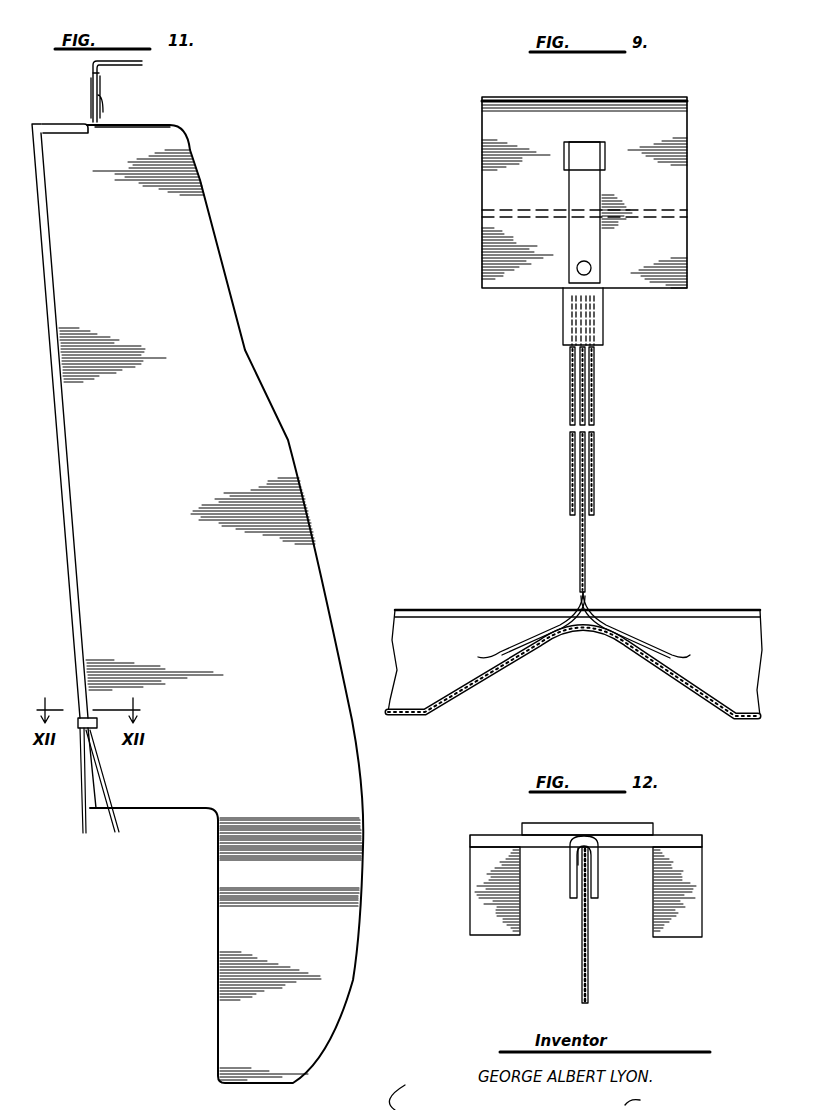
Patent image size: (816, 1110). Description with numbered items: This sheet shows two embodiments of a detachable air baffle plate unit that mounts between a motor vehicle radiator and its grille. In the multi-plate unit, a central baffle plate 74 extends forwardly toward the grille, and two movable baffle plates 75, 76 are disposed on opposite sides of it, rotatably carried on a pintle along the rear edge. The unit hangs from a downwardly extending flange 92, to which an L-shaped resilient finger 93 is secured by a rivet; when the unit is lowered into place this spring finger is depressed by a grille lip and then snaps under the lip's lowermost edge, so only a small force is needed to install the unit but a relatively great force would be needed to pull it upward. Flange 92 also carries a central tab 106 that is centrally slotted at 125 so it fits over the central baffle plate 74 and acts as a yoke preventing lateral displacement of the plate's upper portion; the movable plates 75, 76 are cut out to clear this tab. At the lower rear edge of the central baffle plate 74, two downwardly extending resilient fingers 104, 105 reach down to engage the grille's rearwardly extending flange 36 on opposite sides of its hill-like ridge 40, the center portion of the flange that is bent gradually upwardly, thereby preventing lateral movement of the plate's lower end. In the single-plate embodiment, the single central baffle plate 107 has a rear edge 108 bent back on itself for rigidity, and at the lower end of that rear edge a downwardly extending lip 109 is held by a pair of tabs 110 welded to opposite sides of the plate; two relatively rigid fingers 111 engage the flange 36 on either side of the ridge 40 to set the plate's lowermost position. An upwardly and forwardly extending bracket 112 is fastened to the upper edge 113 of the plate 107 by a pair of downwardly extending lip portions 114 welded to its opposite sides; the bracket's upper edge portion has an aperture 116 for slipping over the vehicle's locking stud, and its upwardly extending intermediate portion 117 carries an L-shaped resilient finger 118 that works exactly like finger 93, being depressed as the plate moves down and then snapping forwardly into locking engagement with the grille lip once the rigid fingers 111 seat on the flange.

In FIG. 9, the rearwardly extending flange 36 is at (398, 720).
In FIG. 9, the hill-like ridge 40 is at (580, 640).
In FIG. 9, the central baffle plate 74 is at (578, 530).
In FIG. 9, the movable baffle plate 75 is at (573, 462).
In FIG. 9, the movable baffle plate 76 is at (600, 458).
In FIG. 9, the downwardly extending flange 92 is at (508, 188).
In FIG. 9, the L-shaped resilient finger 93 is at (588, 200).
In FIG. 9, the downwardly extending resilient finger 104 is at (560, 616).
In FIG. 9, the downwardly extending resilient finger 105 is at (605, 616).
In FIG. 9, the central tab 106 is at (562, 322).
In FIG. 11, the single central baffle plate 107 is at (243, 361).
In FIG. 12, the single central baffle plate 107 is at (590, 975).
In FIG. 11, the rear edge 108 is at (60, 441).
In FIG. 12, the rear edge 108 is at (580, 850).
In FIG. 11, the downwardly extending lip 109 is at (78, 812).
In FIG. 11, the tab 110 is at (95, 730).
In FIG. 12, the tab 110 is at (594, 877).
In FIG. 11, the relatively rigid finger 111 is at (108, 832).
In FIG. 12, the relatively rigid finger 111 is at (685, 923).
In FIG. 11, the upwardly and forwardly extending bracket 112 is at (109, 78).
In FIG. 11, the upper edge 113 is at (110, 130).
In FIG. 11, the downwardly extending lip portion 114 is at (56, 134).
In FIG. 11, the aperture 116 is at (125, 57).
In FIG. 11, the upwardly extending intermediate portion 117 is at (91, 93).
In FIG. 11, the L-shaped resilient finger 118 is at (101, 92).
In FIG. 9, the slot 125 is at (585, 322).